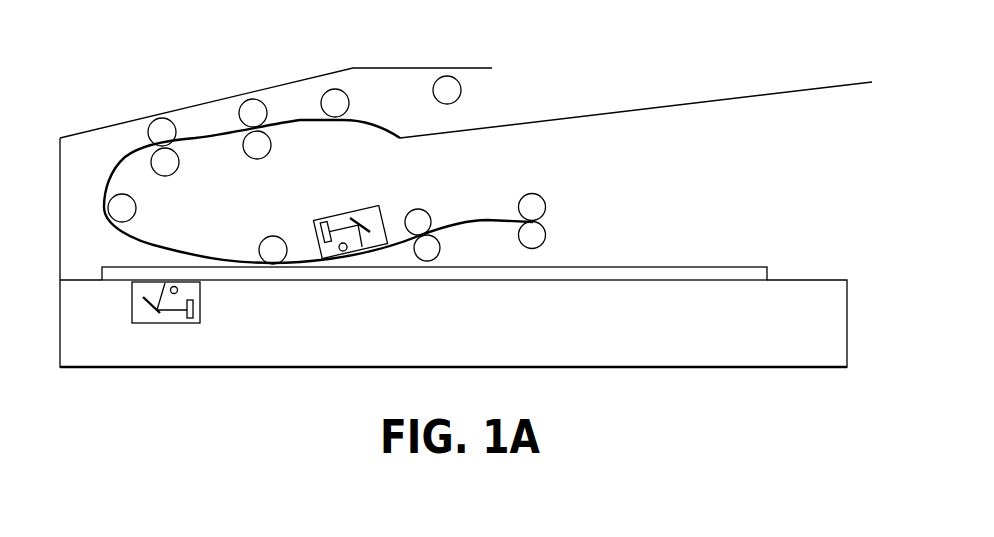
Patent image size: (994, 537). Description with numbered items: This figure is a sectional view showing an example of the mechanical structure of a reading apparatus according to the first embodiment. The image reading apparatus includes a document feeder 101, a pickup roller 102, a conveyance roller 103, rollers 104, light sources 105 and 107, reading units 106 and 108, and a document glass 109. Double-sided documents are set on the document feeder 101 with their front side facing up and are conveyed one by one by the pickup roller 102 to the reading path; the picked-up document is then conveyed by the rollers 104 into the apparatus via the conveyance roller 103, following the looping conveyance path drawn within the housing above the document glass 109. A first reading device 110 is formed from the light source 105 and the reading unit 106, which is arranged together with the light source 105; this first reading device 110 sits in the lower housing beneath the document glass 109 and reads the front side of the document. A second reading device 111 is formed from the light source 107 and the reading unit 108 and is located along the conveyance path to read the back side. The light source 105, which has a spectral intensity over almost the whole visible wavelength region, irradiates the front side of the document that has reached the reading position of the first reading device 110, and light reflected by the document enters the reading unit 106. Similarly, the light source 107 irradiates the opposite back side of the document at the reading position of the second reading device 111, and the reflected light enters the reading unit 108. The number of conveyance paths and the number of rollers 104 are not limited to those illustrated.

The document feeder 101 is at (675, 105).
The pickup roller 102 is at (445, 76).
The conveyance roller 103 is at (335, 89).
The rollers 104 is at (125, 212).
The light source 105 is at (178, 292).
The reading unit 106 is at (188, 320).
The light source 107 is at (342, 251).
The reading unit 108 is at (322, 221).
The document glass 109 is at (675, 266).
The first reading device 110 is at (132, 302).
The second reading device 111 is at (339, 202).